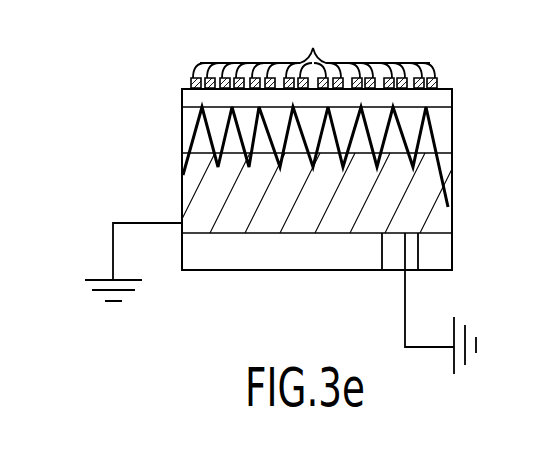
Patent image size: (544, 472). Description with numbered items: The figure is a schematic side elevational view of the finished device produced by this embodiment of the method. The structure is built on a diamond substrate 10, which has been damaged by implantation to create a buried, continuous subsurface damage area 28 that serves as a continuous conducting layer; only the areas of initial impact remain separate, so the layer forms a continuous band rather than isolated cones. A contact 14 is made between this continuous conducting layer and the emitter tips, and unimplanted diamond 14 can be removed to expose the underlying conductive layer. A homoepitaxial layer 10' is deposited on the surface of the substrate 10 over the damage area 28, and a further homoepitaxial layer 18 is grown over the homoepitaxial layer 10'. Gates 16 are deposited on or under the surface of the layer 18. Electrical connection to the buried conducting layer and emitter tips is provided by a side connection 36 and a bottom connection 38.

The diamond substrate 10 is at (317, 282).
The homoepitaxial layer 10' is at (268, 157).
The contact 14 is at (330, 252).
The gates 16 is at (314, 52).
The homoepitaxial layer 18 is at (182, 100).
The subsurface damage area 28 is at (202, 190).
The side connection 36 is at (112, 251).
The bottom connection 38 is at (430, 347).